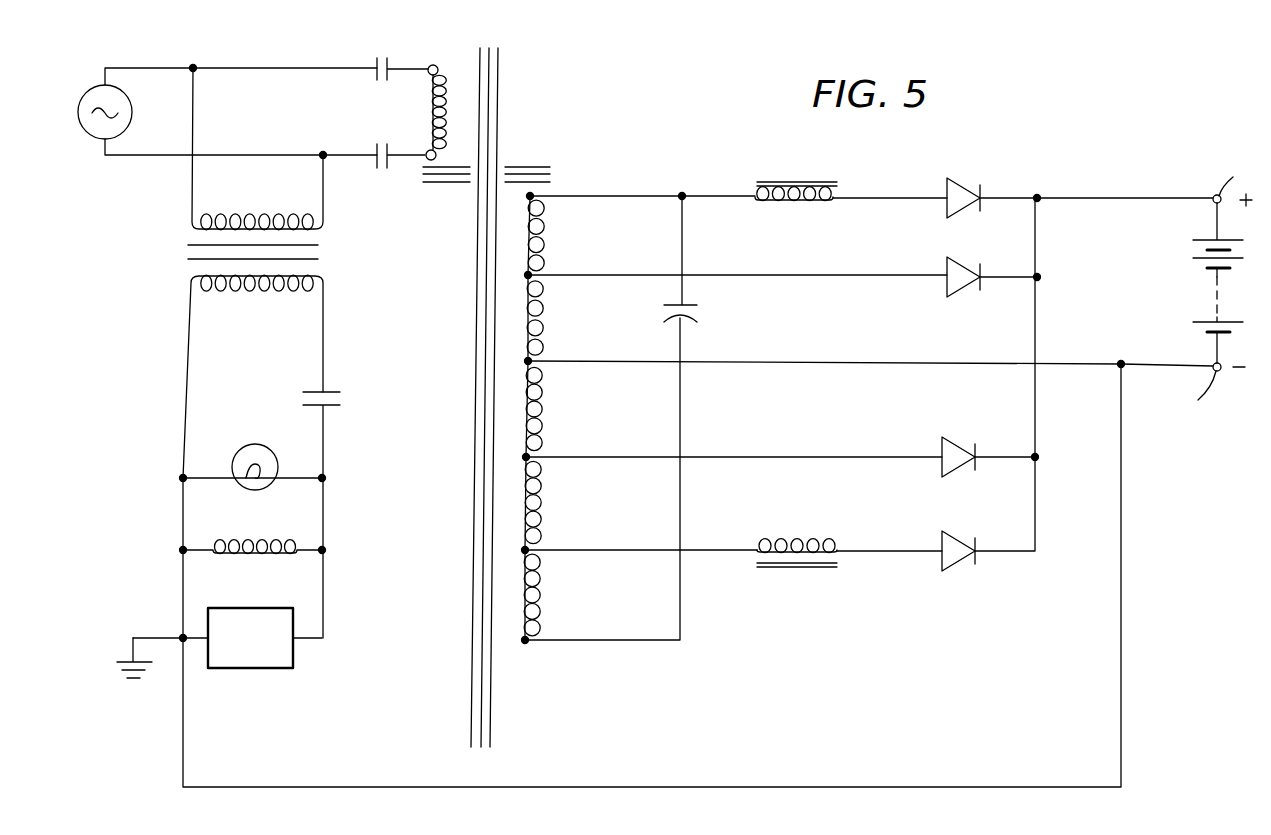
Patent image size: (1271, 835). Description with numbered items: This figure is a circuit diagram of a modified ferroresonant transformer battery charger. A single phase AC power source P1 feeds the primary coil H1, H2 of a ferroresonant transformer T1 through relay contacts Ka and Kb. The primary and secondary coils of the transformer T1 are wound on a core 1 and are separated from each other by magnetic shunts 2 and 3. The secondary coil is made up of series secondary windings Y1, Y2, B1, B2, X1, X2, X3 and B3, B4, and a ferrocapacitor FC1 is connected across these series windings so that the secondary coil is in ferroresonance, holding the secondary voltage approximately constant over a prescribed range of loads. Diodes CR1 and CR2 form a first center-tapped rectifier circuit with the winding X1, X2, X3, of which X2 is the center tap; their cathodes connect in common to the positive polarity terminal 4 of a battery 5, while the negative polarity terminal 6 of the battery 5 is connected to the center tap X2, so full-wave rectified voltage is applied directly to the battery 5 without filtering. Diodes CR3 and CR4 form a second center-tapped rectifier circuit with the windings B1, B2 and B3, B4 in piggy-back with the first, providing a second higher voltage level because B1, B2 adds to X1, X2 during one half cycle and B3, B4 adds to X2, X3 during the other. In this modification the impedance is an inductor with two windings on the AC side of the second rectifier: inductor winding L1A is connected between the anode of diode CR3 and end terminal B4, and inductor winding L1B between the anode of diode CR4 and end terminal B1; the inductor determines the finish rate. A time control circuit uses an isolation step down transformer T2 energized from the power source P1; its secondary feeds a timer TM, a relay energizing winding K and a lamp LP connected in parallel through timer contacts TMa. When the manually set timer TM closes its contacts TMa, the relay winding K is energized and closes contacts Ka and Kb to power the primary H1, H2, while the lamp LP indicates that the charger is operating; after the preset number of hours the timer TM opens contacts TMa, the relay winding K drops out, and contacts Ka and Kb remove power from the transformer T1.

The single phase AC power source P1 is at (97, 94).
The relay contact Ka is at (382, 57).
The relay contact Kb is at (383, 139).
The primary coil terminal H1 is at (448, 52).
The primary coil terminal H2 is at (428, 151).
The core 1 is at (492, 78).
The magnetic shunt 2 is at (443, 177).
The magnetic shunt 3 is at (533, 173).
The ferroresonant transformer T1 is at (533, 157).
The isolation step down transformer T2 is at (166, 266).
The timer contacts TMa is at (337, 402).
The lamp LP is at (297, 432).
The relay energizing winding K is at (257, 539).
The timer TM is at (237, 645).
The secondary winding end terminal B4 is at (533, 199).
The secondary winding terminal B3 is at (531, 268).
The secondary winding terminal X3 is at (530, 280).
The center tap X2 is at (531, 358).
The secondary winding terminal X1 is at (528, 449).
The secondary winding terminal B2 is at (528, 465).
The secondary winding end terminal B1 is at (527, 540).
The secondary winding terminal Y2 is at (527, 557).
The secondary winding terminal Y1 is at (528, 637).
The ferrocapacitor FC1 is at (697, 312).
The inductor winding L1A is at (813, 157).
The inductor winding L1B is at (798, 568).
The first diode CR1 is at (962, 270).
The second diode CR2 is at (955, 447).
The third diode CR3 is at (962, 190).
The fourth diode CR4 is at (955, 543).
The battery 5 is at (1202, 248).
The positive polarity terminal 4 is at (1232, 177).
The negative polarity terminal 6 is at (1219, 395).